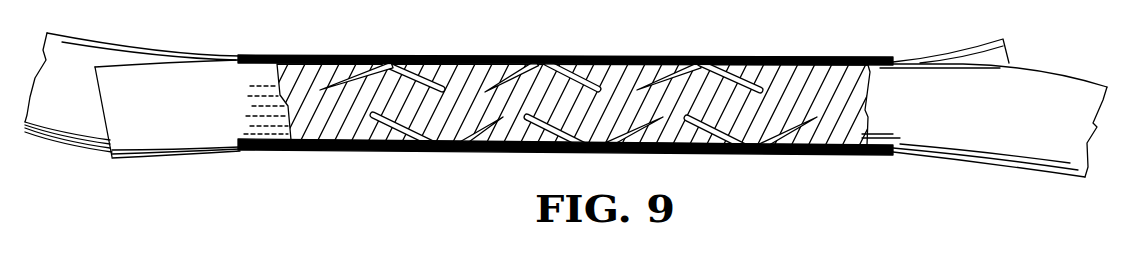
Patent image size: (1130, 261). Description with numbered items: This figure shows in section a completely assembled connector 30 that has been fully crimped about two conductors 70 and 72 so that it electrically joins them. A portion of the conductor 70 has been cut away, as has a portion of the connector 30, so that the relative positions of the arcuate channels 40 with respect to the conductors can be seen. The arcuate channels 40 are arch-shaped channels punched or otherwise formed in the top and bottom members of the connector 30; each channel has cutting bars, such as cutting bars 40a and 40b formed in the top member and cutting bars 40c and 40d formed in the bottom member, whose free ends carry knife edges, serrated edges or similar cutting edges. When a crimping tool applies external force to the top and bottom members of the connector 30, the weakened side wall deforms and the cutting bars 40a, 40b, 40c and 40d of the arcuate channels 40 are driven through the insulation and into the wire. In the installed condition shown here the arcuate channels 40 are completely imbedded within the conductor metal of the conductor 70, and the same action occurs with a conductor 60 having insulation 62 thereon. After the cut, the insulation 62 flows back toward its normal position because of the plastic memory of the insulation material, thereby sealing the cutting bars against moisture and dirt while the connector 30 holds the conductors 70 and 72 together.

The connector 30 is at (277, 44).
The arcuate channels 40 is at (568, 79).
The cutting bar 40a is at (512, 80).
The cutting bar 40b is at (580, 92).
The cutting bar 40c is at (566, 122).
The cutting bar 40d is at (636, 124).
The conductor 60 is at (745, 120).
The insulation 62 is at (522, 153).
The conductor 70 is at (1050, 66).
The conductor 72 is at (979, 60).